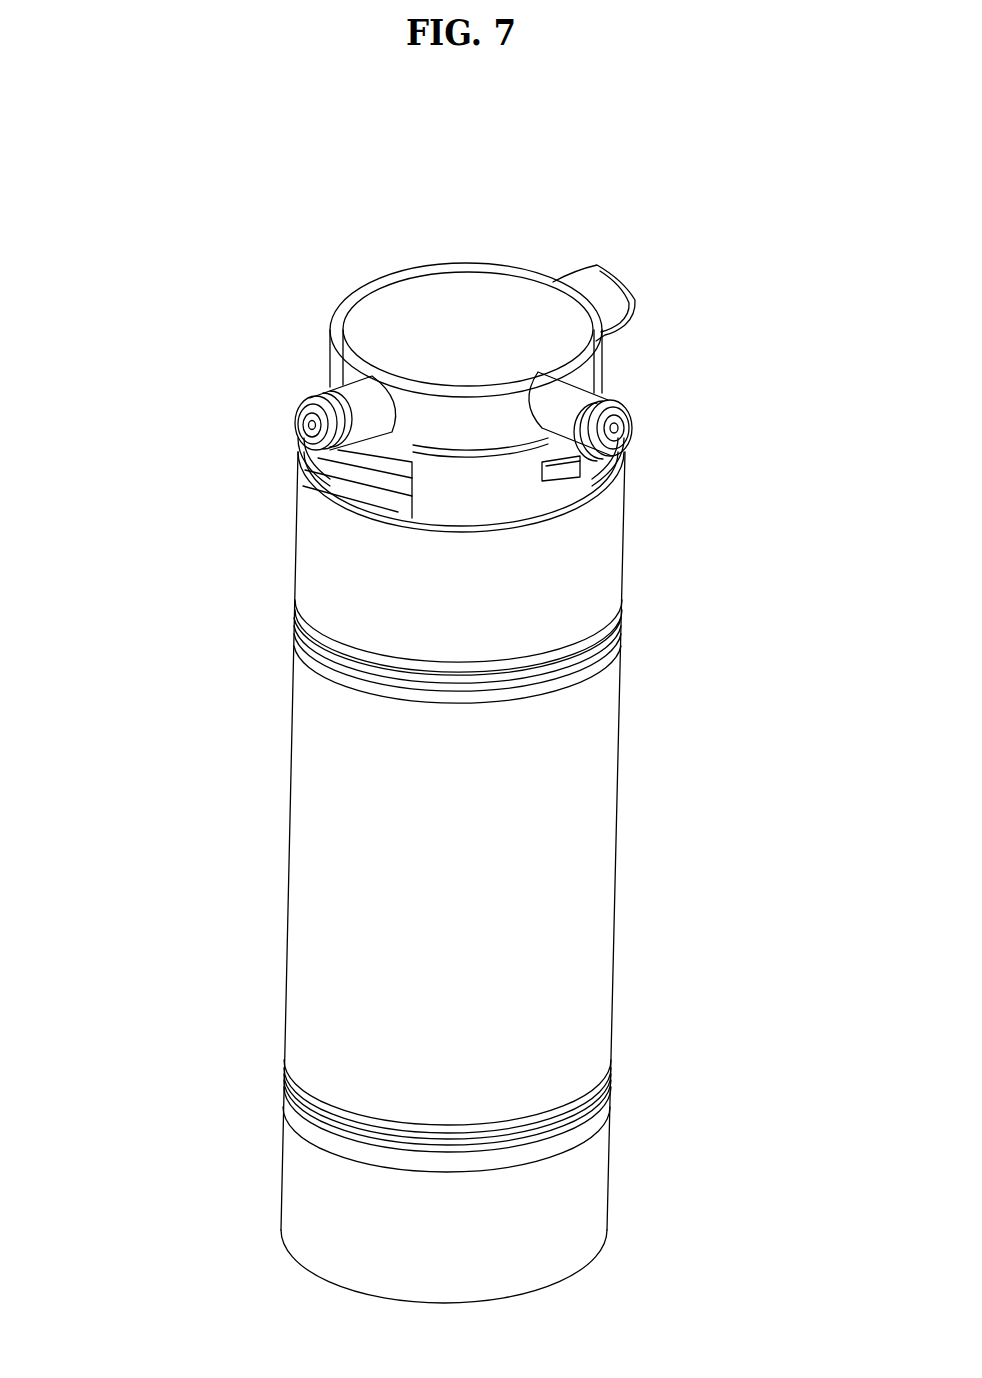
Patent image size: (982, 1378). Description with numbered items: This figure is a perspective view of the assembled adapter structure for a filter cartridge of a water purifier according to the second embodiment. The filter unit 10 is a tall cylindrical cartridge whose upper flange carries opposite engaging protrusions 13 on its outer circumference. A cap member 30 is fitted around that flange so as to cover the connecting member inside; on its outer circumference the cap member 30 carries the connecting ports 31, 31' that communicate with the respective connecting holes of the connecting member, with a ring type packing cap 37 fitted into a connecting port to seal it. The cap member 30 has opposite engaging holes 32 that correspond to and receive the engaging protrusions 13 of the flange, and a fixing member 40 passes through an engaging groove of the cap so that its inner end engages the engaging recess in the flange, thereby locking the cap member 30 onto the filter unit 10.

The filter unit 10 is at (258, 906).
The engaging protrusions 13 is at (363, 474).
The cap member 30 is at (455, 236).
The connecting port 31 is at (284, 397).
The connecting port 31' is at (617, 376).
The engaging holes 32 is at (403, 497).
The ring type packing cap 37 is at (622, 396).
The fixing member 40 is at (608, 484).